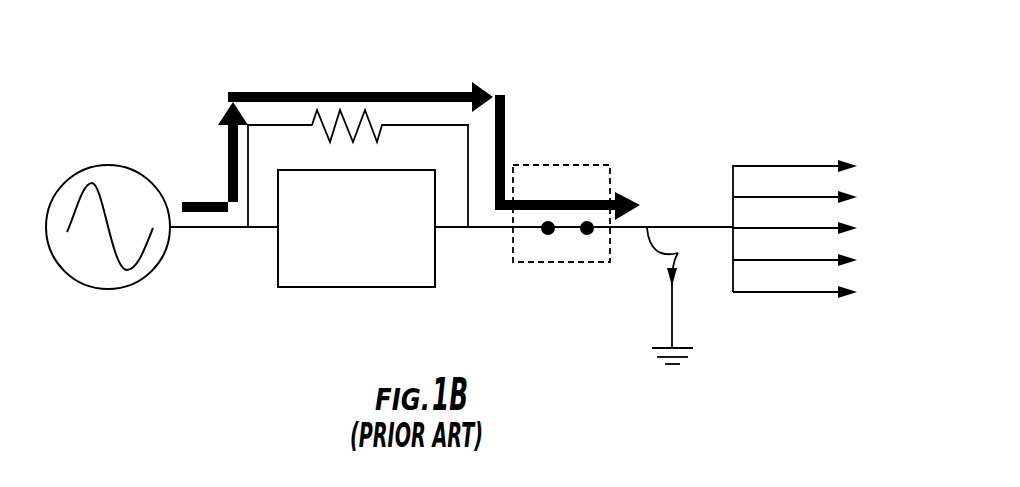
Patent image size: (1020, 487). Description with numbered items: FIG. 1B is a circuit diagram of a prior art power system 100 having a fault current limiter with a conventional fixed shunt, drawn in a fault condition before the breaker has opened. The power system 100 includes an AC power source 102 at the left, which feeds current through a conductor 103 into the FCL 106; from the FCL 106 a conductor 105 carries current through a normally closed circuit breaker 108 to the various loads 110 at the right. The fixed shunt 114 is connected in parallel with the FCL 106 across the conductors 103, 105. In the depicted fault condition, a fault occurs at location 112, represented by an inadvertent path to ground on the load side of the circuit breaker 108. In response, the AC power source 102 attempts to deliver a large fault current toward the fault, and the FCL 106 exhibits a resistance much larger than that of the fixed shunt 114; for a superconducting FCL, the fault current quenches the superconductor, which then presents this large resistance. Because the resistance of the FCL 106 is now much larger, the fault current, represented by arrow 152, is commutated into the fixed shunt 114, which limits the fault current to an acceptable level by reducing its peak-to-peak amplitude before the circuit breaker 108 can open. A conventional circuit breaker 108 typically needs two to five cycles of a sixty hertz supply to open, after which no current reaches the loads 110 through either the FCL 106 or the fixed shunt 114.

The power system 100 is at (166, 116).
The AC power source 102 is at (112, 290).
The conductor 103 is at (197, 229).
The conductor 105 is at (455, 229).
The FCL 106 is at (318, 288).
The circuit breaker 108 is at (583, 165).
The loads 110 is at (780, 315).
The fault location 112 is at (648, 293).
The fixed shunt 114 is at (398, 67).
The fault current arrow 152 is at (283, 91).